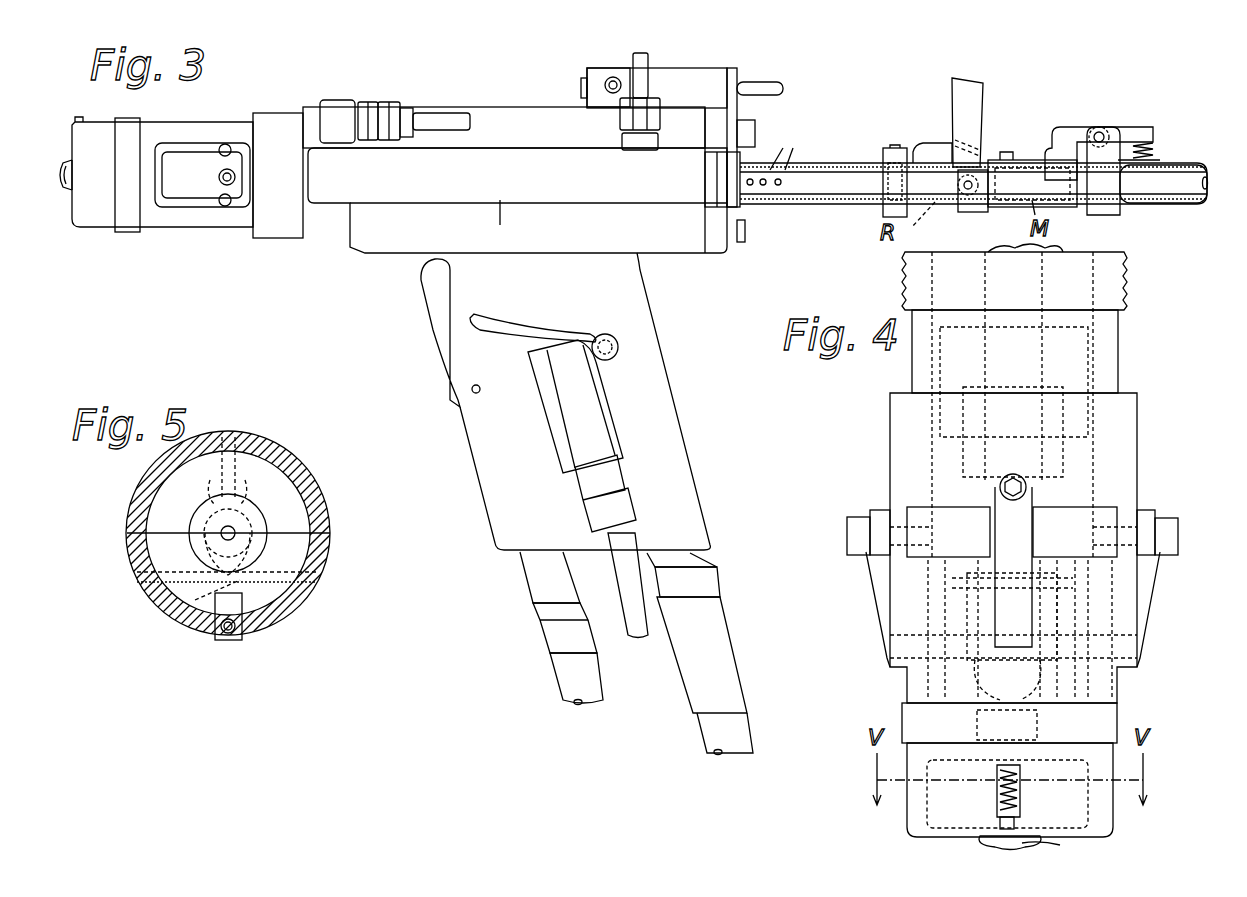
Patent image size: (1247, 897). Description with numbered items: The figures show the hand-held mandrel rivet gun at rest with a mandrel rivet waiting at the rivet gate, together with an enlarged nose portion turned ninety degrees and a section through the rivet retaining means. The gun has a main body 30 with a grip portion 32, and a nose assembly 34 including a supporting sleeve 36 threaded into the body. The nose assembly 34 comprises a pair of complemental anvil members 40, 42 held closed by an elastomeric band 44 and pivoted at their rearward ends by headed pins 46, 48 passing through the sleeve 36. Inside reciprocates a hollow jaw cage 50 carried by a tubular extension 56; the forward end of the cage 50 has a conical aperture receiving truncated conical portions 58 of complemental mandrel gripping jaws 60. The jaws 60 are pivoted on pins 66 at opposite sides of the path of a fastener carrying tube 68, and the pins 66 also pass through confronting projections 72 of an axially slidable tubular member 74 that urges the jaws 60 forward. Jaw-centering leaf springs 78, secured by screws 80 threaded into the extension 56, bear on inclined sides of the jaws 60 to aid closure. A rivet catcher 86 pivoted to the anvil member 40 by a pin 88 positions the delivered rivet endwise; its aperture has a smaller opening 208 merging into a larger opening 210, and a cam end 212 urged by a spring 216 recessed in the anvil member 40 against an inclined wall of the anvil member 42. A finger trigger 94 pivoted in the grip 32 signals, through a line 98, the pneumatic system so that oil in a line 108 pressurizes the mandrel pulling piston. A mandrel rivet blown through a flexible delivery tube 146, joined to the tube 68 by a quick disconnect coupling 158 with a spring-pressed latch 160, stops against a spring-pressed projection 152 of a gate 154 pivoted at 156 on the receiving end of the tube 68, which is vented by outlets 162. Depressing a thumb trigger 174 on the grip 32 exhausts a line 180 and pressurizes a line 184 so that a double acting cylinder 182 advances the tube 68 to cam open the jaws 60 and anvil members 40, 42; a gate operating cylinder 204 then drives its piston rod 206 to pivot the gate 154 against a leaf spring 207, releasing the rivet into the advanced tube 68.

In FIG. 3, the main body 30 is at (505, 108).
In FIG. 3, the grip portion 32 is at (670, 395).
In FIG. 3, the nose assembly 34 is at (114, 250).
In FIG. 4, the nose assembly 34 is at (1199, 426).
In FIG. 3, the supporting sleeve 36 is at (307, 112).
In FIG. 4, the supporting sleeve 36 is at (1120, 335).
In FIG. 3, the anvil member 40 is at (100, 122).
In FIG. 4, the anvil member 40 is at (905, 818).
In FIG. 5, the anvil member 40 is at (310, 610).
In FIG. 3, the anvil member 42 is at (78, 228).
In FIG. 4, the anvil member 42 is at (1113, 822).
In FIG. 5, the anvil member 42 is at (265, 510).
In FIG. 3, the elastomeric band 44 is at (128, 120).
In FIG. 4, the elastomeric band 44 is at (1117, 712).
In FIG. 3, the headed pins 46 is at (227, 144).
In FIG. 4, the headed pins 46 is at (886, 520).
In FIG. 3, the headed pins 48 is at (225, 207).
In FIG. 4, the jaw cage 50 is at (1090, 768).
In FIG. 4, the tubular extension 56 is at (1090, 365).
In FIG. 4, the truncated conical portions 58 is at (1035, 755).
In FIG. 4, the mandrel gripping jaws 60 is at (1008, 725).
In FIG. 4, the pins 66 is at (1135, 625).
In FIG. 3, the fastener carrying tube 68 is at (775, 205).
In FIG. 4, the fastener carrying tube 68 is at (1014, 277).
In FIG. 4, the projections 72 is at (1007, 682).
In FIG. 4, the tubular member 74 is at (1070, 465).
In FIG. 3, the jaw-centering leaf springs 78 is at (190, 200).
In FIG. 4, the jaw-centering leaf springs 78 is at (1022, 520).
In FIG. 3, the screws 80 is at (219, 176).
In FIG. 4, the screws 80 is at (1000, 487).
In FIG. 4, the rivet catcher 86 is at (1045, 840).
In FIG. 5, the rivet catcher 86 is at (195, 612).
In FIG. 4, the pin 88 is at (920, 830).
In FIG. 5, the pin 88 is at (300, 560).
In FIG. 3, the finger trigger 94 is at (430, 300).
In FIG. 3, the line 98 is at (560, 695).
In FIG. 3, the line 108 is at (700, 742).
In FIG. 3, the flexible delivery tube 146 is at (1188, 205).
In FIG. 3, the spring-pressed projection 152 is at (905, 148).
In FIG. 3, the gate 154 is at (952, 90).
In FIG. 3, the pivot 156 is at (972, 180).
In FIG. 3, the quick disconnect coupling 158 is at (1110, 214).
In FIG. 3, the spring-pressed latch 160 is at (1080, 125).
In FIG. 3, the outlets 162 is at (795, 145).
In FIG. 3, the thumb trigger 174 is at (495, 330).
In FIG. 3, the line 180 is at (437, 104).
In FIG. 3, the double acting cylinder 182 is at (519, 222).
In FIG. 3, the line 184 is at (644, 55).
In FIG. 3, the gate operating cylinder 204 is at (695, 68).
In FIG. 3, the piston rod 206 is at (768, 84).
In FIG. 3, the leaf spring 207 is at (930, 146).
In FIG. 5, the smaller opening 208 is at (248, 506).
In FIG. 5, the larger opening 210 is at (250, 520).
In FIG. 4, the cam end 212 is at (1018, 820).
In FIG. 5, the cam end 212 is at (262, 452).
In FIG. 4, the spring 216 is at (997, 800).
In FIG. 5, the spring 216 is at (228, 640).